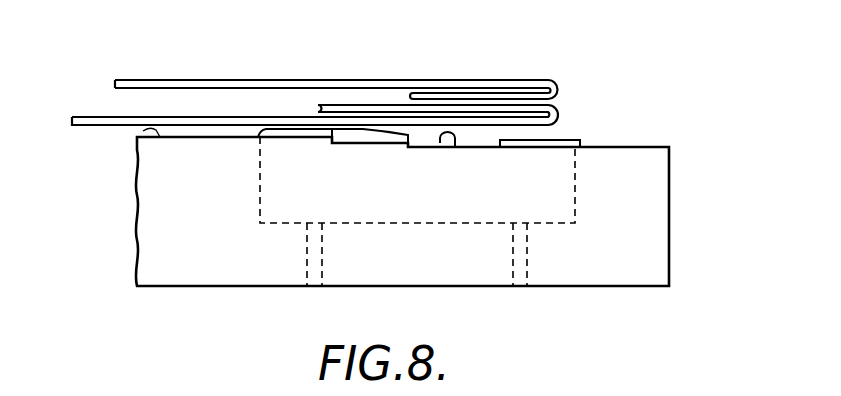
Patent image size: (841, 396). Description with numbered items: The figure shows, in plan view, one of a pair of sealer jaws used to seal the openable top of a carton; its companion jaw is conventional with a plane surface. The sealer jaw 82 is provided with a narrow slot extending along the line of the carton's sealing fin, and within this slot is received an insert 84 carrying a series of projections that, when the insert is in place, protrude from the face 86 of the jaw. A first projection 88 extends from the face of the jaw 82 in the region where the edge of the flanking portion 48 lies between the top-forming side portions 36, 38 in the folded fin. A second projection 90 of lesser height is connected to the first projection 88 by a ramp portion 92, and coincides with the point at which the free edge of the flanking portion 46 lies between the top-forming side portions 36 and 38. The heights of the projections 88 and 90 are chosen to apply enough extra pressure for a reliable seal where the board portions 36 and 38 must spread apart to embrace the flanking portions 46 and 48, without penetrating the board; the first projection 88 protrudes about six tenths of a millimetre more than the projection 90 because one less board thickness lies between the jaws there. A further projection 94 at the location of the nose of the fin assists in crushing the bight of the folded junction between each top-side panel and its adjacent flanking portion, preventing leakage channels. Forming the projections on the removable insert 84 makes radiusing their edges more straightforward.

The top-forming side portion 36 is at (390, 80).
The top-forming side portion 38 is at (518, 129).
The flanking portion 46 is at (473, 100).
The flanking portion 48 is at (333, 92).
The sealer jaw 82 is at (648, 250).
The insert 84 is at (540, 183).
The face of the jaw 86 is at (143, 131).
The first projection 88 is at (283, 130).
The second projection 90 is at (453, 150).
The ramp portion 92 is at (379, 134).
The further projection 94 is at (510, 150).